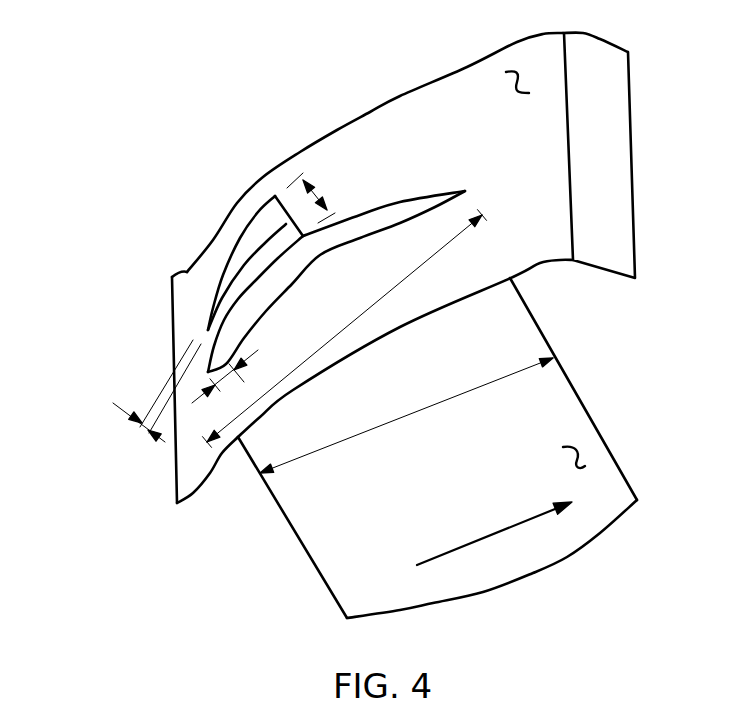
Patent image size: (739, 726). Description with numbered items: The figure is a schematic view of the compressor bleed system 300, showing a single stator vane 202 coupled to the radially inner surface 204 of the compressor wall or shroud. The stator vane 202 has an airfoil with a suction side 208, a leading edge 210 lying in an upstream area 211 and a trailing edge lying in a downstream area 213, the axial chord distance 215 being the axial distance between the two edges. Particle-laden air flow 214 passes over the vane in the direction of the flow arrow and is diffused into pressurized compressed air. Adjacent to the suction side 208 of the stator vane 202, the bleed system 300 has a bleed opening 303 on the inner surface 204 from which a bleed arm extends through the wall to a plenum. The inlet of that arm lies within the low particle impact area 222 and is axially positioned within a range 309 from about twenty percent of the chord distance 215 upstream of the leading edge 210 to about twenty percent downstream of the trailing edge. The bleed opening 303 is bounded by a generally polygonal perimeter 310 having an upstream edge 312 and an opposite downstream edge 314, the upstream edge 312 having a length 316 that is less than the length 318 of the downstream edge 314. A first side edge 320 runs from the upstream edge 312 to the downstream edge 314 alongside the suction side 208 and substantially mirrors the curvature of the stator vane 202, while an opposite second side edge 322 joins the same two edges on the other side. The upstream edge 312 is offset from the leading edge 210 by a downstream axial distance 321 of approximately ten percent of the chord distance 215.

The compressor bleed system 300 is at (128, 95).
The radially inner surface 204 is at (526, 76).
The stator vane 202 is at (458, 448).
The low particle impact area 222 is at (187, 271).
The upstream edge 312 is at (172, 337).
The downstream area 213 is at (649, 393).
The upstream area 211 is at (294, 613).
The leading edge 210 is at (280, 512).
The bleed opening 303 is at (205, 228).
The perimeter 310 is at (260, 228).
The downstream edge 314 is at (285, 210).
The second side edge 322 is at (247, 297).
The suction side 208 is at (336, 262).
The first side edge 320 is at (255, 296).
The length of downstream edge 318 is at (314, 193).
The range 309 is at (400, 282).
The downstream axial distance 321 is at (244, 381).
The length of upstream edge 316 is at (123, 412).
The axial chord distance 215 is at (398, 419).
The air flow 214 is at (493, 533).